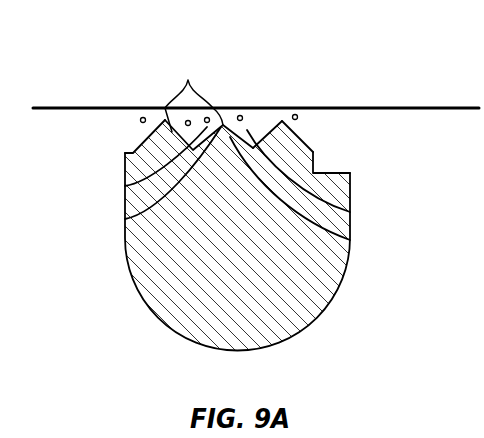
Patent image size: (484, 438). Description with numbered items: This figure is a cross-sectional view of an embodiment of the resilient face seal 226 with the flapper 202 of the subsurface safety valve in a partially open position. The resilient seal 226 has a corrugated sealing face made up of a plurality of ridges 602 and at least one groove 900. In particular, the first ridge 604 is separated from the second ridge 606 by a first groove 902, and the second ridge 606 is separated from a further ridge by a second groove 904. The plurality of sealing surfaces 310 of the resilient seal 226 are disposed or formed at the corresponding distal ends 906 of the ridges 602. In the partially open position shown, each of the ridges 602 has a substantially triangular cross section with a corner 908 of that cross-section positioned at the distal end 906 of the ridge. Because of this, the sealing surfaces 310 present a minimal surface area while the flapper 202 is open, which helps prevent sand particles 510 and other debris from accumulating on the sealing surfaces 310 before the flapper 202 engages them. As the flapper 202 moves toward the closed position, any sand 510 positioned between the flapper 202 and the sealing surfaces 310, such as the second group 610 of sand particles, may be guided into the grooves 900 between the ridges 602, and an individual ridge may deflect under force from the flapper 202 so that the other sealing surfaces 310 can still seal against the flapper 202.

The flapper 202 is at (85, 107).
The resilient face seal 226 is at (361, 308).
The sealing surfaces 310 is at (188, 81).
The sand particles 510 is at (143, 124).
The plurality of ridges 602 is at (163, 128).
The first ridge 604 is at (163, 133).
The second ridge 606 is at (228, 125).
The second group of sand particles 610 is at (299, 139).
The groove 900 is at (125, 186).
The first groove 902 is at (125, 219).
The second groove 904 is at (350, 241).
The distal ends 906 is at (282, 118).
The corner 908 is at (297, 136).